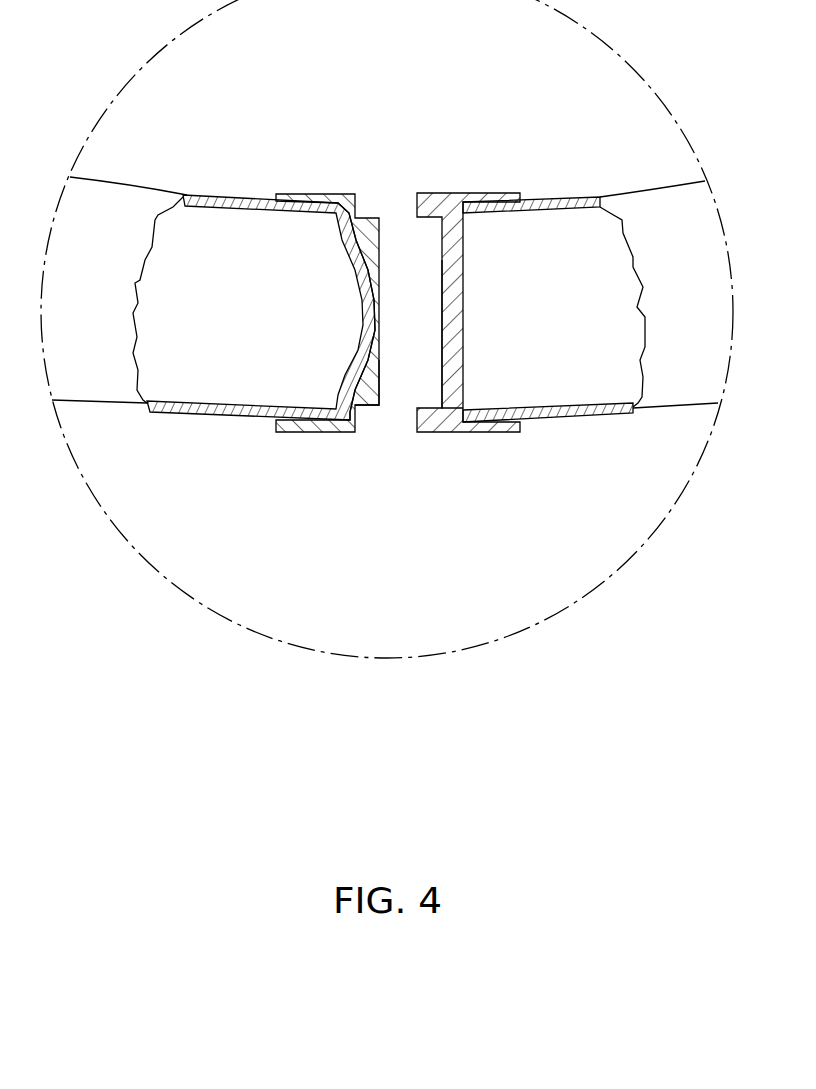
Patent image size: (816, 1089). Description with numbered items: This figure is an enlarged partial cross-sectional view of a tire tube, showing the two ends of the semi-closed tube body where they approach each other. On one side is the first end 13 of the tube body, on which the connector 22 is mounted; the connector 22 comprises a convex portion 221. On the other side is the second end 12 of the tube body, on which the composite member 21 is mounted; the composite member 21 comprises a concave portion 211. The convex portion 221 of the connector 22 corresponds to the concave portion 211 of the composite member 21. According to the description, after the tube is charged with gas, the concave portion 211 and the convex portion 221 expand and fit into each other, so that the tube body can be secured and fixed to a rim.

The second end 12 is at (443, 262).
The first end 13 is at (343, 232).
The composite member 21 is at (471, 199).
The connector 22 is at (322, 194).
The concave portion 211 is at (445, 363).
The convex portion 221 is at (368, 390).